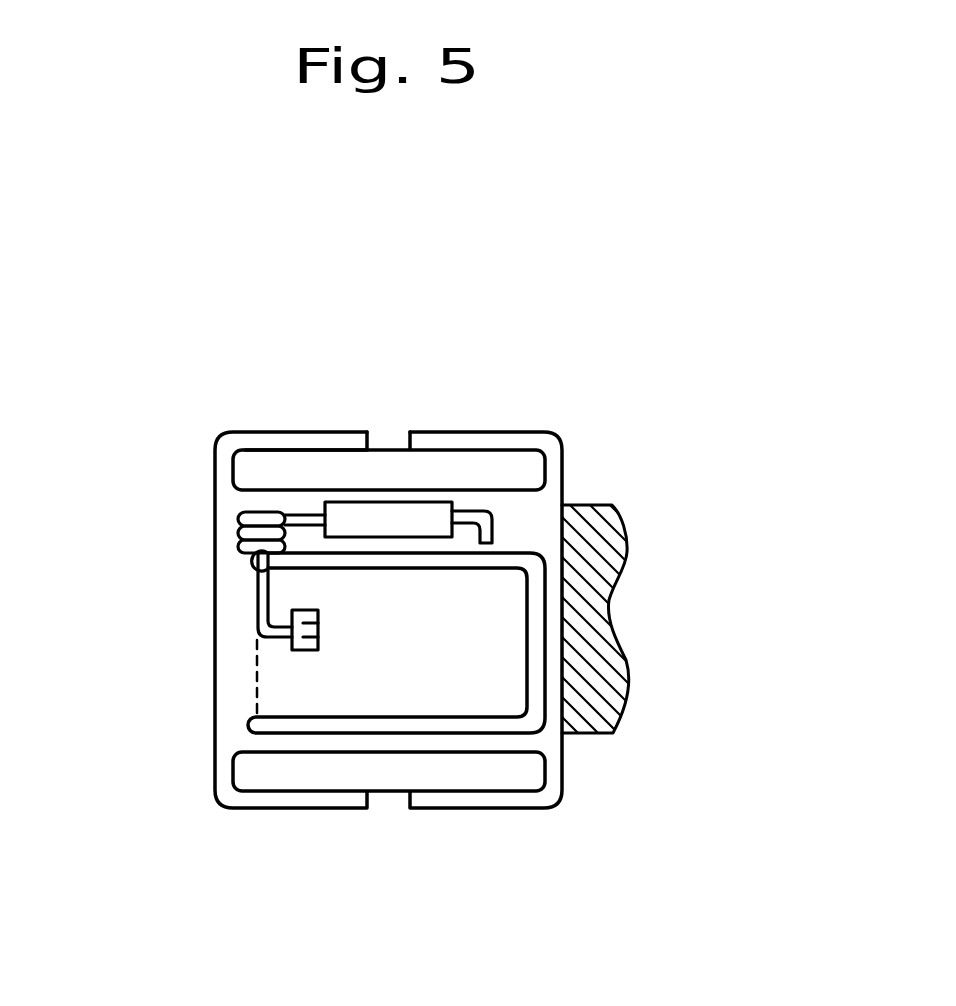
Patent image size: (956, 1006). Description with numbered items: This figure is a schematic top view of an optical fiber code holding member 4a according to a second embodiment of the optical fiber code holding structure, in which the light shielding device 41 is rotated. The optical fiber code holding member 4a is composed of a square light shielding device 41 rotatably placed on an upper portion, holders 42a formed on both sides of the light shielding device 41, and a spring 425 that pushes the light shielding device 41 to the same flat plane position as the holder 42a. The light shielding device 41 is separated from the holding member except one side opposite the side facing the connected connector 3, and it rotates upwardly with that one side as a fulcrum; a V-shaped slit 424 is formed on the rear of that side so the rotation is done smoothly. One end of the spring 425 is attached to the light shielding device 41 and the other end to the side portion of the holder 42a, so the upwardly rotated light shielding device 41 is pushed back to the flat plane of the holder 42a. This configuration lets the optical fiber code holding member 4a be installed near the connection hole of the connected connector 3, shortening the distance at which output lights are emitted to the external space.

The optical fiber code holding member 4a is at (215, 732).
The holder 42a is at (291, 477).
The spring 425 is at (258, 607).
The slit 424 is at (257, 661).
The light shielding device 41 is at (415, 643).
The connected connector 3 is at (613, 683).